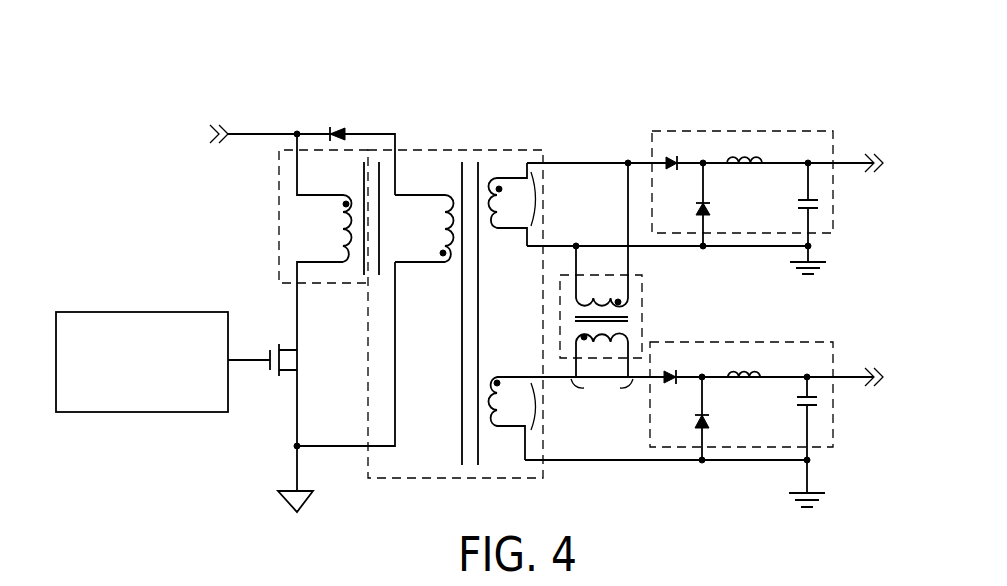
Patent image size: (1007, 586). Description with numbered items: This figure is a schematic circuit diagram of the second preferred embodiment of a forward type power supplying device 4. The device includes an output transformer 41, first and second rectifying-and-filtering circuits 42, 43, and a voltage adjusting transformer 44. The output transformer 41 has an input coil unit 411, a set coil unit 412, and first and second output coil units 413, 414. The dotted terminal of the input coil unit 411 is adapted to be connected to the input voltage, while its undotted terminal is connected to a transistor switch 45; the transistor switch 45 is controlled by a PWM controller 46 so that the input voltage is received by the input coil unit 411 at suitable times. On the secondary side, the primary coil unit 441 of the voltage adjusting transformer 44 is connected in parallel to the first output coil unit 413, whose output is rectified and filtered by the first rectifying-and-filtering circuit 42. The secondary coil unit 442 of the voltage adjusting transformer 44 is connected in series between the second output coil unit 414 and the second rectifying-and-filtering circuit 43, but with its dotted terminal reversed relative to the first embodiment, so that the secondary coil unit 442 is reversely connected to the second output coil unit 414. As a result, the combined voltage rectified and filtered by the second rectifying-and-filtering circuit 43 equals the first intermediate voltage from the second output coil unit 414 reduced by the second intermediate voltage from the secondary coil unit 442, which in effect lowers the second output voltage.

The power supplying device 4 is at (622, 110).
The output transformer 41 is at (440, 150).
The input coil unit 411 is at (341, 240).
The set coil unit 412 is at (452, 237).
The first output coil unit 413 is at (500, 214).
The second output coil unit 414 is at (498, 398).
The first rectifying-and-filtering circuit 42 is at (808, 131).
The second rectifying-and-filtering circuit 43 is at (787, 342).
The voltage adjusting transformer 44 is at (643, 282).
The primary coil unit 441 is at (599, 296).
The secondary coil unit 442 is at (606, 349).
The transistor switch 45 is at (283, 345).
The PWM controller 46 is at (97, 312).